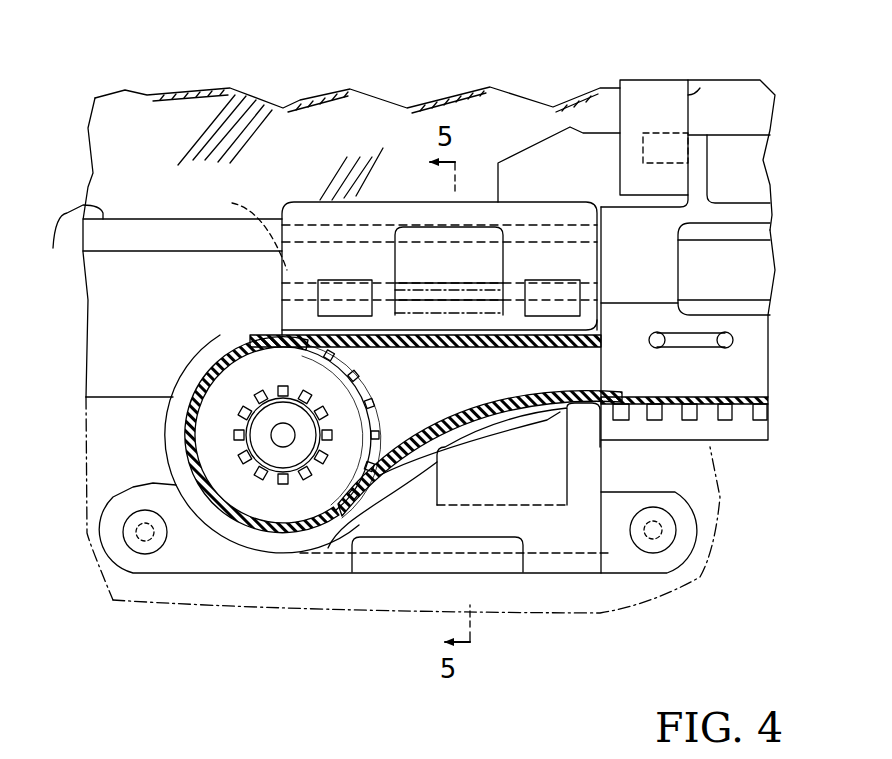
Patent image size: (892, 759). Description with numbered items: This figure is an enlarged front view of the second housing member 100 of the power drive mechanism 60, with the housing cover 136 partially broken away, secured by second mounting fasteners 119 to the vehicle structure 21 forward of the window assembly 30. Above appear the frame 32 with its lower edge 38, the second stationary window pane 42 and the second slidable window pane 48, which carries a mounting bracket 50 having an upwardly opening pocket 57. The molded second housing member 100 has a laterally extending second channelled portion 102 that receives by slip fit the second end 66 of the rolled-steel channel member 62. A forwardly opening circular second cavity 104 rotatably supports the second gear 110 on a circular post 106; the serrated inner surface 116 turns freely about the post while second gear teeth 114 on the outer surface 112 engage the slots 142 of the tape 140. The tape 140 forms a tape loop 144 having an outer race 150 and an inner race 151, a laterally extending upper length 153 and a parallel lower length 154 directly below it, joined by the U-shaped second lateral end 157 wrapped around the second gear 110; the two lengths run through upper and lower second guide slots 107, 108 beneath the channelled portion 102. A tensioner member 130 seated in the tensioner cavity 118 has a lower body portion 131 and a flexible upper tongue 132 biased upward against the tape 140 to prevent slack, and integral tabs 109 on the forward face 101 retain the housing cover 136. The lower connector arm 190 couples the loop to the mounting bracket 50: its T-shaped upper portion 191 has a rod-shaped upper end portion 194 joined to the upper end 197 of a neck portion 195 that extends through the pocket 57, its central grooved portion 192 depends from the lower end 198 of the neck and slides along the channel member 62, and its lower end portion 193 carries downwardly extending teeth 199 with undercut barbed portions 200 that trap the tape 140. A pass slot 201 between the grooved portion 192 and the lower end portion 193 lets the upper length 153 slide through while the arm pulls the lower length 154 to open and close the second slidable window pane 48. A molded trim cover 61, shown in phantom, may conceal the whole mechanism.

The vehicle structure 21 is at (98, 287).
The window assembly 30 is at (222, 66).
The frame 32 is at (152, 230).
The lower edge 38 is at (61, 252).
The second stationary window pane 42 is at (352, 112).
The second slidable window pane 48 is at (598, 107).
The mounting bracket 50 is at (672, 80).
The upwardly opening pocket 57 is at (700, 90).
The power drive mechanism 60 is at (607, 590).
The trim cover 61 is at (190, 593).
The channel member 62 is at (420, 247).
The second end 66 is at (243, 228).
The second housing member 100 is at (200, 352).
The forward face 101 is at (350, 248).
The second channelled portion 102 is at (513, 215).
The second cavity 104 is at (395, 470).
The circular post 106 is at (283, 437).
The upper second guide slot 107 is at (563, 345).
The lower second guide slot 108 is at (583, 403).
The integral tabs 109 is at (337, 303).
The second gear 110 is at (225, 477).
The outer surface 112 is at (287, 465).
The second gear teeth 114 is at (283, 330).
The serrated inner surface 116 is at (300, 457).
The tensioner cavity 118 is at (457, 470).
The second mounting fasteners 119 is at (127, 532).
The tensioner member 130 is at (545, 455).
The lower body portion 131 is at (493, 460).
The flexible upper tongue 132 is at (457, 432).
The housing cover 136 is at (600, 537).
The tape 140 is at (188, 406).
The slots 142 is at (540, 423).
The tape loop 144 is at (198, 373).
The outer race 150 is at (420, 440).
The inner race 151 is at (387, 483).
The upper length 153 is at (584, 336).
The lower length 154 is at (768, 410).
The second U-shaped lateral end 157 is at (187, 447).
The lower connector arm 190 is at (770, 290).
The T-shaped upper portion 191 is at (728, 132).
The central grooved portion 192 is at (773, 247).
The lower end portion 193 is at (750, 377).
The rod-shaped upper end portion 194 is at (658, 147).
The neck portion 195 is at (700, 173).
The upper end 197 is at (702, 143).
The lower end 198 is at (700, 207).
The teeth 199 is at (697, 420).
The undercut barbed portions 200 is at (637, 400).
The pass slot 201 is at (712, 338).